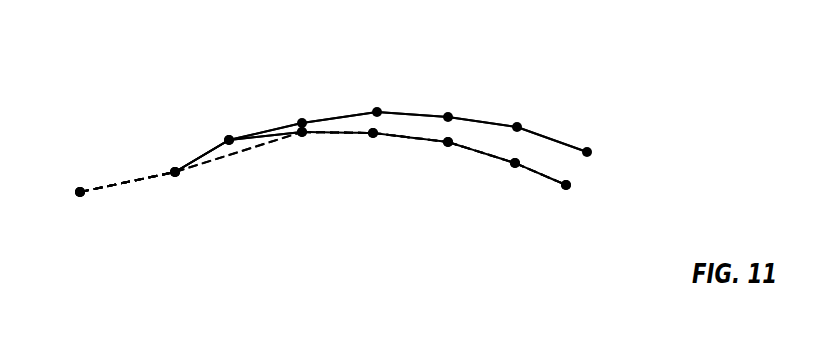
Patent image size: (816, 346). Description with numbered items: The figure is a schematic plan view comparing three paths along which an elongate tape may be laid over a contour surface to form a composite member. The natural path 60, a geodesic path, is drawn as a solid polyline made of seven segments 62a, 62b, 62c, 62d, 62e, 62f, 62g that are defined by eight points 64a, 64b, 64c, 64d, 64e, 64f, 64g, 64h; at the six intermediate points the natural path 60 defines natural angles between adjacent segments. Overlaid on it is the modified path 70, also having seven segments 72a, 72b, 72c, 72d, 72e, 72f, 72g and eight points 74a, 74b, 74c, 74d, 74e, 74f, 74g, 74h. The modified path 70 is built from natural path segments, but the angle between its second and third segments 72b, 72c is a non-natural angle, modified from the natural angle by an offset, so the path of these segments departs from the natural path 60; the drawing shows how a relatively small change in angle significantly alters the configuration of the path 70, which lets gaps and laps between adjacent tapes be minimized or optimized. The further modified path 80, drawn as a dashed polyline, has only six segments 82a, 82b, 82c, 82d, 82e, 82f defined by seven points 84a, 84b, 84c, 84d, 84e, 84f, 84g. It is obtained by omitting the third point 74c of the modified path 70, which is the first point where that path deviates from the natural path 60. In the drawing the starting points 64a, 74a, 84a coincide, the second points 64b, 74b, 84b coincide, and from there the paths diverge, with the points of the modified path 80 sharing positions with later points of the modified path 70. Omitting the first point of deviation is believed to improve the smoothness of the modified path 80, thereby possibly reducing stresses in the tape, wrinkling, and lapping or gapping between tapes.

The natural path 60 is at (590, 124).
The modified path 70 is at (590, 193).
The modified path 80 is at (590, 193).
The segment 62a is at (123, 183).
The segment 62b is at (207, 150).
The segment 62c is at (268, 132).
The segment 62d is at (348, 115).
The segment 62e is at (413, 114).
The segment 62f is at (480, 120).
The segment 62g is at (547, 137).
The point 64a is at (77, 196).
The point 64b is at (173, 167).
The point 64c is at (229, 135).
The point 64d is at (305, 121).
The point 64e is at (379, 109).
The point 64f is at (450, 114).
The point 64g is at (519, 124).
The point 64h is at (590, 149).
The segment 72a is at (123, 183).
The segment 72b is at (207, 150).
The segment 72c is at (280, 133).
The segment 72d is at (342, 133).
The segment 72e is at (411, 137).
The segment 72f is at (480, 152).
The segment 72g is at (540, 175).
The point 74a is at (77, 196).
The point 74b is at (173, 167).
The point 74c is at (229, 135).
The point 74d is at (302, 137).
The point 74e is at (375, 137).
The point 74f is at (449, 147).
The point 74g is at (516, 168).
The point 74h is at (568, 190).
The segment 82a is at (123, 183).
The segment 82b is at (240, 152).
The segment 82c is at (342, 133).
The segment 82d is at (411, 137).
The segment 82e is at (480, 152).
The segment 82f is at (540, 175).
The point 84a is at (77, 196).
The point 84b is at (173, 167).
The point 84c is at (302, 137).
The point 84d is at (375, 137).
The point 84e is at (449, 147).
The point 84f is at (516, 168).
The point 84g is at (568, 190).